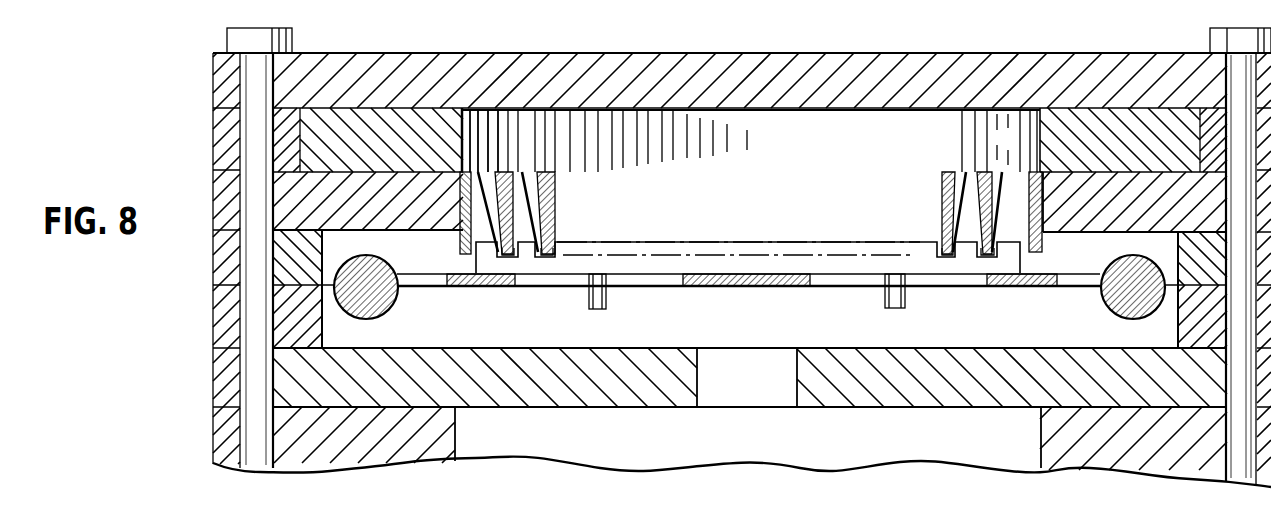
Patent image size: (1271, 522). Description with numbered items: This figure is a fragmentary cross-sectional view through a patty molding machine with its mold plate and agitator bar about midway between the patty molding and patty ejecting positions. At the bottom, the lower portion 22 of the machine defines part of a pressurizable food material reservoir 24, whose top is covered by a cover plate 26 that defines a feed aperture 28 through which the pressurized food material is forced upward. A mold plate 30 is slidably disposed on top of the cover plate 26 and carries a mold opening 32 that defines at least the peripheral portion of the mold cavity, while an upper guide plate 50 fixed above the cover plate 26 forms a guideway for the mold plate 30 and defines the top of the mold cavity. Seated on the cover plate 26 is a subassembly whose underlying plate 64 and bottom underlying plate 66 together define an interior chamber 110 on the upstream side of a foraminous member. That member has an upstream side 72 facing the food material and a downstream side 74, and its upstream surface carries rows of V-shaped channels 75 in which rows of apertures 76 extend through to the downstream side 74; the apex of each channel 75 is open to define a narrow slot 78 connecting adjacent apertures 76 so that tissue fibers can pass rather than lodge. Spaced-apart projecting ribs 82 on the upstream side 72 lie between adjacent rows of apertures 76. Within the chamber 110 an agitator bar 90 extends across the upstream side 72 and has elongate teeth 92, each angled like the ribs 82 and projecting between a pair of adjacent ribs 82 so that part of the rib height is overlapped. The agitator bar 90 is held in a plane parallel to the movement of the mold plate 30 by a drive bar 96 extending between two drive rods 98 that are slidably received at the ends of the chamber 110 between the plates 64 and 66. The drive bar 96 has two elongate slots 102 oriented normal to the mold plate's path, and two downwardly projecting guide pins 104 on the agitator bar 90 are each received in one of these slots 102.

The lower portion 22 is at (332, 474).
The food material reservoir 24 is at (477, 456).
The cover plate 26 is at (543, 398).
The feed aperture 28 is at (797, 394).
The mold plate 30 is at (1136, 106).
The mold opening 32 is at (470, 137).
The upper guide plate 50 is at (1080, 74).
The underlying plate 64 is at (323, 243).
The bottom underlying plate 66 is at (312, 334).
The upstream side 72 is at (1062, 239).
The downstream side 74 is at (1028, 166).
The V-shaped channel 75 is at (528, 215).
The aperture 76 is at (530, 171).
The slot 78 is at (523, 168).
The rib 82 is at (980, 232).
The agitator bar 90 is at (952, 283).
The tooth 92 is at (1012, 252).
The drive bar 96 is at (428, 288).
The drive rod 98 is at (380, 307).
The elongate slot 102 is at (519, 285).
The guide pin 104 is at (598, 310).
The interior chamber 110 is at (673, 318).